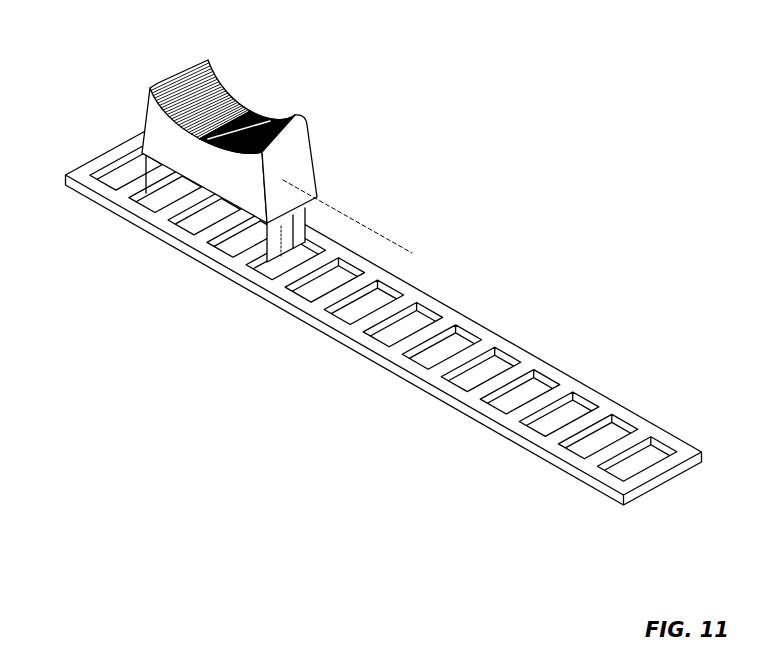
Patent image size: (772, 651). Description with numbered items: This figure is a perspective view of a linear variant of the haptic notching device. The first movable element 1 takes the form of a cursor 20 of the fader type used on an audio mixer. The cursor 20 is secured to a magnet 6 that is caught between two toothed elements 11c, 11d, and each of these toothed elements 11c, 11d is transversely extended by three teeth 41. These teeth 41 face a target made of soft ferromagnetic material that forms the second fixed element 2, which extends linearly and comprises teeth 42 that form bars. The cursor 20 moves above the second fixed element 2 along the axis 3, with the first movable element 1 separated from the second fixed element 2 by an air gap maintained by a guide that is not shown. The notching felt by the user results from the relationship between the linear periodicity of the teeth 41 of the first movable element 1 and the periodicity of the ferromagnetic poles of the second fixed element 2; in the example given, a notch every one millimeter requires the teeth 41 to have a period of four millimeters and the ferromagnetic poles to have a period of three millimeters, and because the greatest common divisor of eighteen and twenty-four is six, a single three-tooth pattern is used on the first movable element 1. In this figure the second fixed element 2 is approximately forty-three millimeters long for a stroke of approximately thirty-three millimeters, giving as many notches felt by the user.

The first movable element 1 is at (226, 212).
The second fixed element 2 is at (389, 320).
The axis 3 is at (387, 237).
The magnet 6 is at (283, 232).
The toothed element 11c is at (163, 180).
The toothed element 11d is at (317, 197).
The cursor 20 is at (292, 148).
The teeth 41 is at (263, 217).
The teeth 42 is at (470, 340).